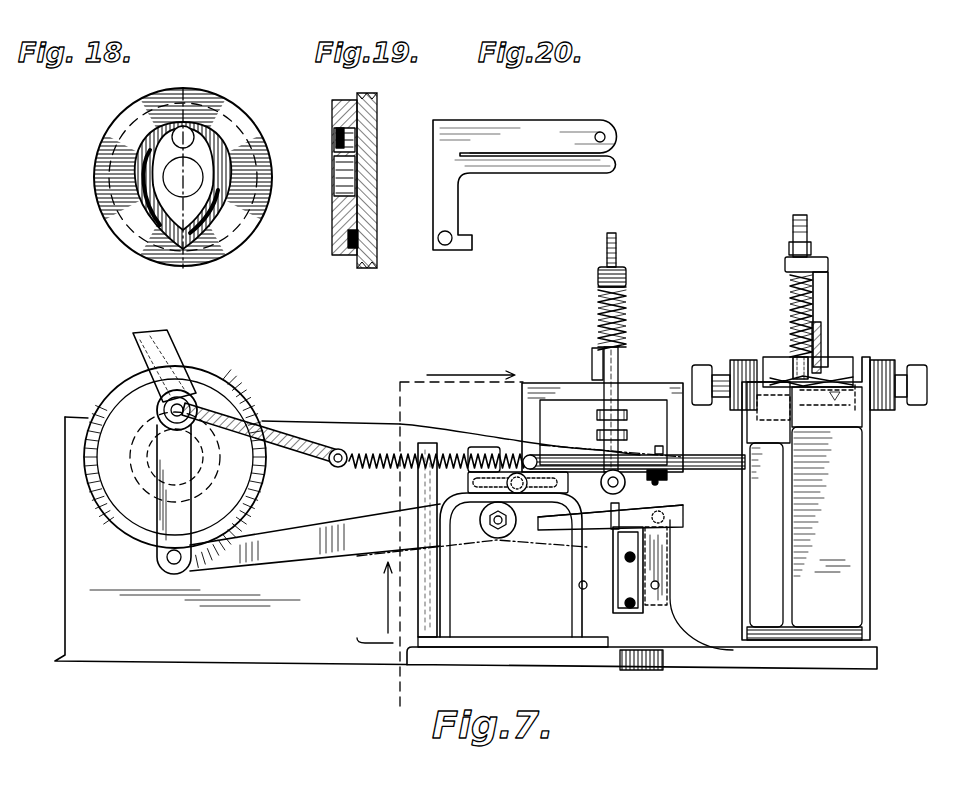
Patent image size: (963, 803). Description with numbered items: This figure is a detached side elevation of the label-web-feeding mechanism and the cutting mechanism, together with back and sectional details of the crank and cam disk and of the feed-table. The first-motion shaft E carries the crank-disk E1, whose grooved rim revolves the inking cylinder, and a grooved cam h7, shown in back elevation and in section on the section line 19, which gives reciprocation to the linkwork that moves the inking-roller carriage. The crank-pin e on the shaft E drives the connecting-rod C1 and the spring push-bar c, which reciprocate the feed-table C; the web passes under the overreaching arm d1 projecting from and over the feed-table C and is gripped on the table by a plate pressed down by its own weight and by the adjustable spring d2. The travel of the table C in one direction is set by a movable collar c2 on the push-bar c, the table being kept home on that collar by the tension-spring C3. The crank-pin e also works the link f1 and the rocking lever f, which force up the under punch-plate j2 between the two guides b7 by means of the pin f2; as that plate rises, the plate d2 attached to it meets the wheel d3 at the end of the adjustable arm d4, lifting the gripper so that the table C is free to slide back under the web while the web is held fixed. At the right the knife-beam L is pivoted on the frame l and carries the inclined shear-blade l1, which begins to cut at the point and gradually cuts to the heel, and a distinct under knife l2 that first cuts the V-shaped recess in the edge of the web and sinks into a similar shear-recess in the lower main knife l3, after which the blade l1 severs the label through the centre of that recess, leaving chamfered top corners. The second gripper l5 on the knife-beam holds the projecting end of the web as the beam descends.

In FIG. 18, the crank-disk E1 is at (122, 138).
In FIG. 18, the grooved cam h7 is at (158, 215).
In FIG. 19, the grooved cam h7 is at (378, 242).
In FIG. 18, the section line 19 is at (183, 184).
In FIG. 20, the feed-table C is at (530, 160).
In FIG. 7, the feed-table C is at (573, 390).
In FIG. 20, the overreaching arm d1 is at (535, 140).
In FIG. 7, the overreaching arm d1 is at (592, 355).
In FIG. 7, the first-motion shaft E is at (158, 457).
In FIG. 7, the crank-pin e is at (157, 409).
In FIG. 7, the link f1 is at (174, 499).
In FIG. 7, the rocking lever f is at (307, 552).
In FIG. 7, the connecting-rod C1 is at (283, 437).
In FIG. 7, the tension-spring C3 is at (385, 452).
In FIG. 7, the adjustable arm d4 is at (626, 421).
In FIG. 7, the spring push-bar c is at (637, 463).
In FIG. 7, the adjustable spring d2 is at (601, 298).
In FIG. 7, the wheel d3 is at (627, 486).
In FIG. 7, the movable collar c2 is at (656, 483).
In FIG. 7, the under punch-plate j2 is at (676, 507).
In FIG. 7, the guides b7 is at (579, 586).
In FIG. 7, the pin f2 is at (652, 545).
In FIG. 7, the inclined shear-blade l1 is at (835, 388).
In FIG. 7, the under knife l2 is at (858, 386).
In FIG. 7, the lower main knife l3 is at (862, 420).
In FIG. 7, the knife-beam L is at (829, 286).
In FIG. 7, the second gripper l5 is at (792, 362).
In FIG. 7, the frame l is at (806, 498).